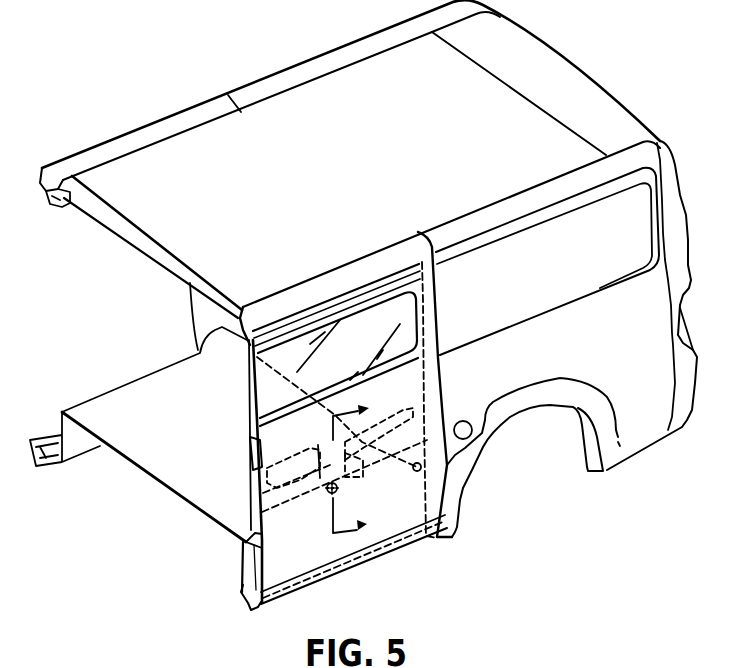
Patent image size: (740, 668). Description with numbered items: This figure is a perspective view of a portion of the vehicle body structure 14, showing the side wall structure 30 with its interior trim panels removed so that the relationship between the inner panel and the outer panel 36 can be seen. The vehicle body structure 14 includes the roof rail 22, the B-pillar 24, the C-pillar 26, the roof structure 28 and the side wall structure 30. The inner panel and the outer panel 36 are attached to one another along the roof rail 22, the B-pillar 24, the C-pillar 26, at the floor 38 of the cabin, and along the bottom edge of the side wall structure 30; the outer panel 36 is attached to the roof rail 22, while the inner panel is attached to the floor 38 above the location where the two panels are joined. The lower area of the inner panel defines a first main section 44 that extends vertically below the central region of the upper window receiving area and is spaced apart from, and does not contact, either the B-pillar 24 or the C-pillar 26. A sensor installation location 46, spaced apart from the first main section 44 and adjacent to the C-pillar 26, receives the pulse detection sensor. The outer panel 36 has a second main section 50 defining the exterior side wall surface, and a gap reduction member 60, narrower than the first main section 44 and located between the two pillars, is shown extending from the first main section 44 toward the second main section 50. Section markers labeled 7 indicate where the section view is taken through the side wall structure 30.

The vehicle body structure 14 is at (118, 76).
The roof structure 28 is at (320, 115).
The roof rail 22 is at (567, 187).
The C-pillar 26 is at (441, 312).
The floor 38 is at (148, 403).
The B-pillar 24 is at (250, 457).
The first main section 44 is at (268, 494).
The gap reduction member 60 is at (268, 515).
The sensor installation location 46 is at (424, 468).
The side wall structure 30 is at (398, 502).
The outer panel 36 is at (357, 547).
The second main section 50 is at (308, 547).
The section line 7- 7 is at (359, 462).